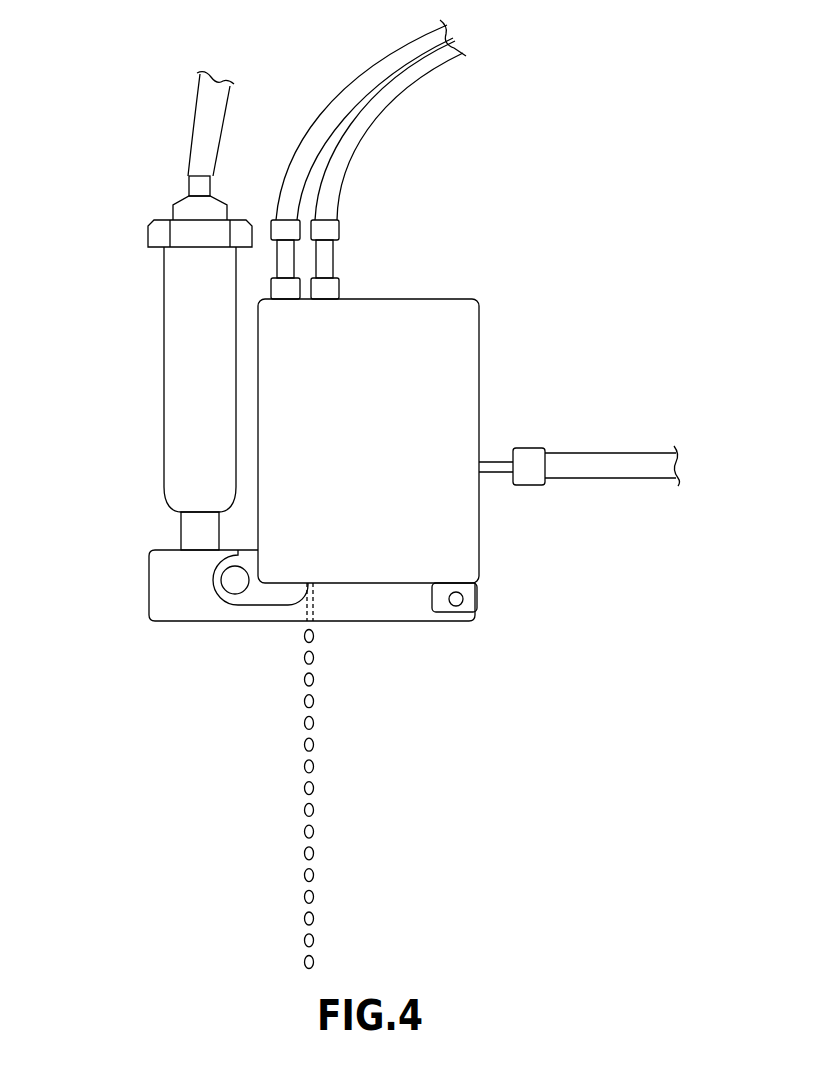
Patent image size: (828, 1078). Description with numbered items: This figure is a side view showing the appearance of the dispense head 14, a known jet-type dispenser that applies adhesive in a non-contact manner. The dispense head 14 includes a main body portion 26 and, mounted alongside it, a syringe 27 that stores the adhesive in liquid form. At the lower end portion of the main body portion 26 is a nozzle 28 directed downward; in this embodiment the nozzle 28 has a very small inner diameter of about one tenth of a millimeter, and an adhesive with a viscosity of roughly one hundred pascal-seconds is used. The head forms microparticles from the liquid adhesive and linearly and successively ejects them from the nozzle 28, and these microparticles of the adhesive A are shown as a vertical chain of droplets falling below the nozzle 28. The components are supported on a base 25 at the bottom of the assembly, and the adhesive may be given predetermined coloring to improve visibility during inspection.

The dispense head 14 is at (450, 283).
The base 25 is at (160, 607).
The main body portion 26 is at (467, 360).
The syringe 27 is at (177, 347).
The nozzle 28 is at (318, 602).
The microparticles of the adhesive A is at (313, 743).